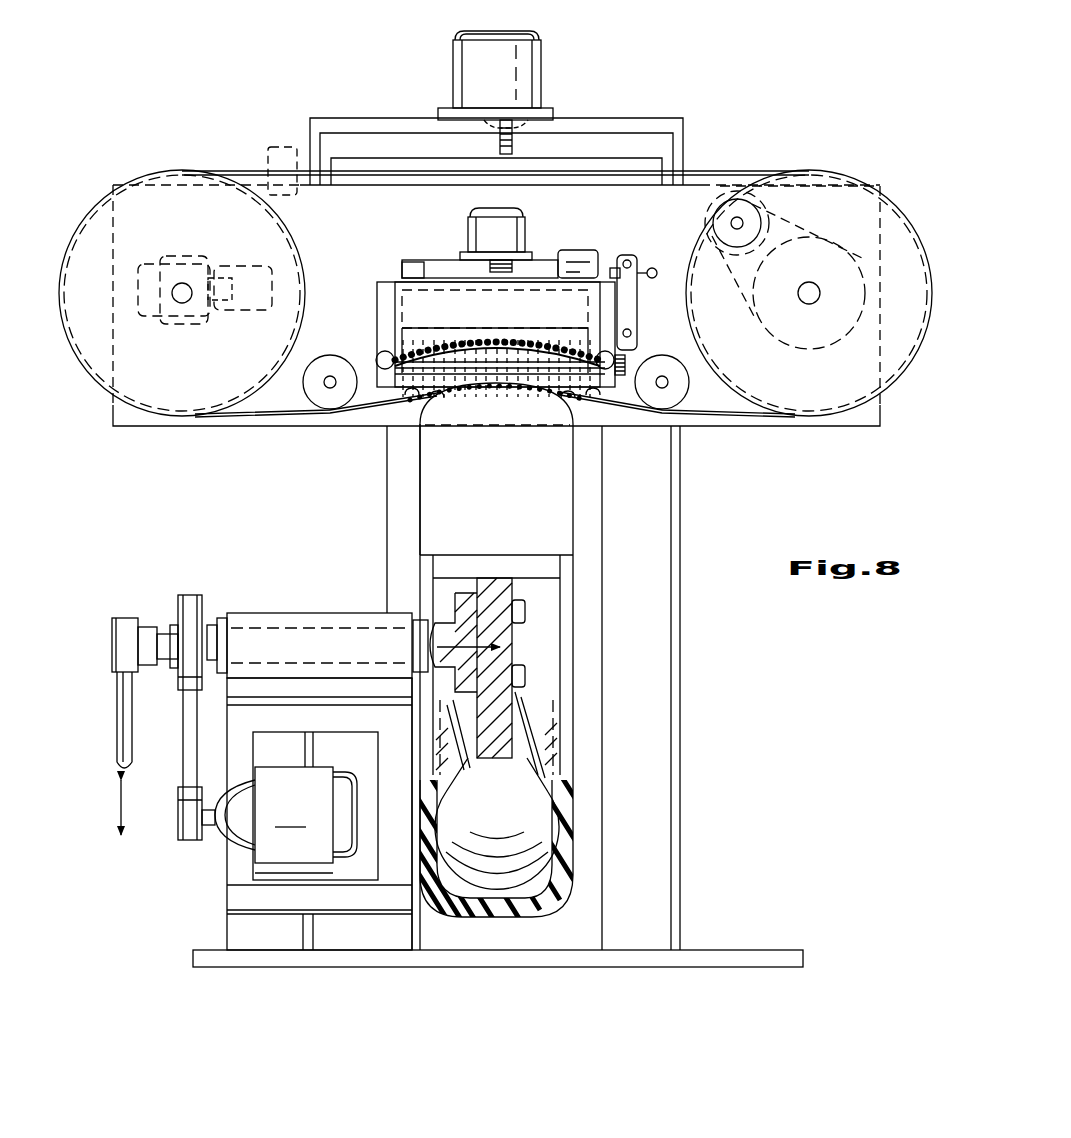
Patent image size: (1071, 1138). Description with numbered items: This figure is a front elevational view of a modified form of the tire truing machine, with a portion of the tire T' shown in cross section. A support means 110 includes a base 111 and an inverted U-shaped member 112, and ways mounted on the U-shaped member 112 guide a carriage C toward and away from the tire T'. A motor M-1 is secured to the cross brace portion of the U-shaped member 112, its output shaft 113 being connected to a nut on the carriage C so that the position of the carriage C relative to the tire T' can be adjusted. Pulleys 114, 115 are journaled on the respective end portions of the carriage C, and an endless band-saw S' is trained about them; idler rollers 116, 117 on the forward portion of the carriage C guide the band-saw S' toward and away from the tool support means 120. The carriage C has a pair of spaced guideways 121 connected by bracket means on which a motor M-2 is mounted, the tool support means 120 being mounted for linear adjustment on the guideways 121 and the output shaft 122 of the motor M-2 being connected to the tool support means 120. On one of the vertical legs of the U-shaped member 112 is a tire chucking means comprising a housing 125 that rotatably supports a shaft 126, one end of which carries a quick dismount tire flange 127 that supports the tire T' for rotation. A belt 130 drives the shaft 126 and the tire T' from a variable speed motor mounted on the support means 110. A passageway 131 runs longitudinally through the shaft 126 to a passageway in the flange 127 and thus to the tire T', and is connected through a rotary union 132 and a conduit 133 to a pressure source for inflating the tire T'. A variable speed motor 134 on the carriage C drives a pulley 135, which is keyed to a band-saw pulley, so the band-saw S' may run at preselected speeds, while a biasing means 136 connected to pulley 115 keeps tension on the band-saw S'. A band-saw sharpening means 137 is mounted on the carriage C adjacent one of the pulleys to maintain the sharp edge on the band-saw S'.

The support means 110 is at (507, 542).
The base 111 is at (735, 956).
The inverted U-shaped member 112 is at (668, 802).
The output shaft 113 is at (512, 140).
The pulley 114 is at (905, 238).
The pulley 115 is at (96, 218).
The idler roller 116 is at (678, 394).
The idler roller 117 is at (312, 394).
The tool support means 120 is at (487, 302).
The guideways 121 is at (405, 268).
The output shaft 122 is at (492, 270).
The housing 125 is at (317, 759).
The shaft 126 is at (288, 612).
The quick dismount tire flange 127 is at (530, 630).
The belt 130 is at (188, 840).
The passageway 131 is at (505, 647).
The rotary union 132 is at (122, 645).
The conduit 133 is at (118, 716).
The variable speed motor 134 is at (712, 210).
The pulley 135 is at (845, 256).
The biasing means 136 is at (258, 266).
The band-saw sharpening means 137 is at (276, 147).
The motor M-1 is at (472, 66).
The motor M-2 is at (517, 227).
The band-saw S' is at (495, 313).
The carriage C is at (866, 428).
The tire T' is at (500, 830).